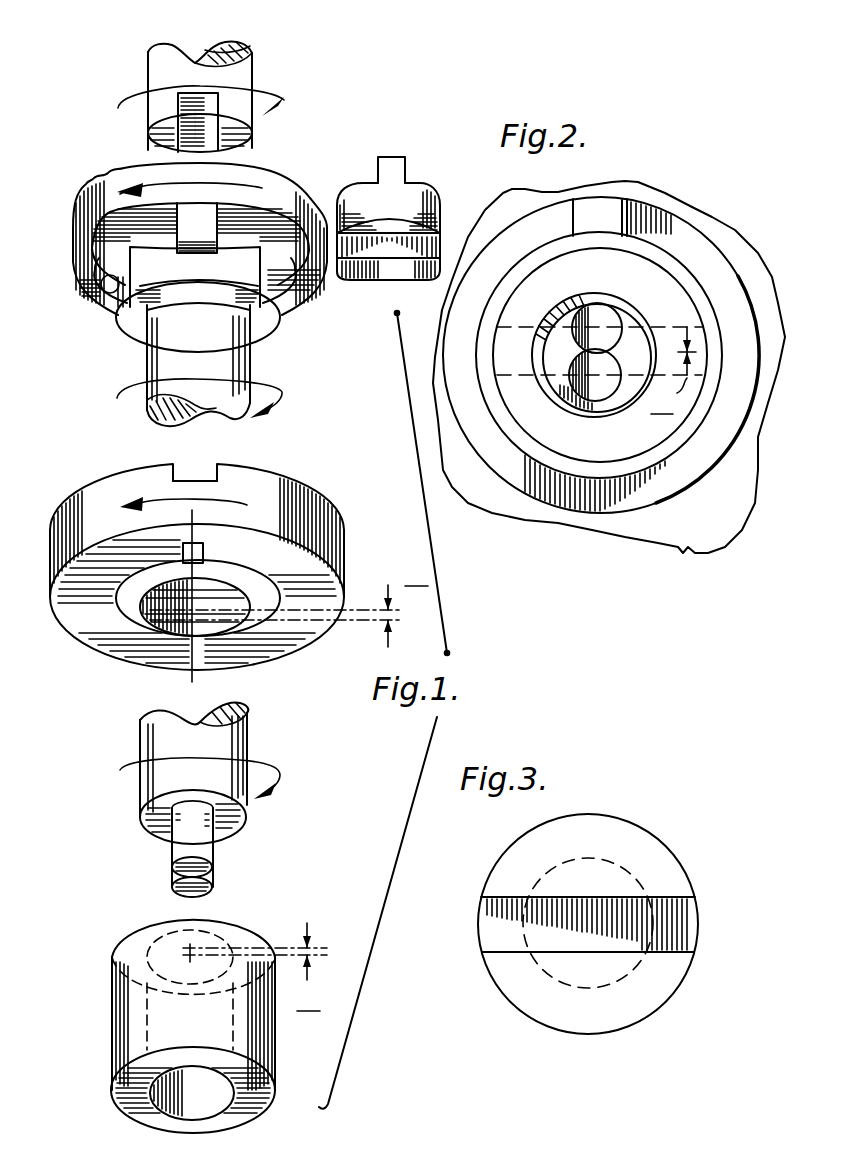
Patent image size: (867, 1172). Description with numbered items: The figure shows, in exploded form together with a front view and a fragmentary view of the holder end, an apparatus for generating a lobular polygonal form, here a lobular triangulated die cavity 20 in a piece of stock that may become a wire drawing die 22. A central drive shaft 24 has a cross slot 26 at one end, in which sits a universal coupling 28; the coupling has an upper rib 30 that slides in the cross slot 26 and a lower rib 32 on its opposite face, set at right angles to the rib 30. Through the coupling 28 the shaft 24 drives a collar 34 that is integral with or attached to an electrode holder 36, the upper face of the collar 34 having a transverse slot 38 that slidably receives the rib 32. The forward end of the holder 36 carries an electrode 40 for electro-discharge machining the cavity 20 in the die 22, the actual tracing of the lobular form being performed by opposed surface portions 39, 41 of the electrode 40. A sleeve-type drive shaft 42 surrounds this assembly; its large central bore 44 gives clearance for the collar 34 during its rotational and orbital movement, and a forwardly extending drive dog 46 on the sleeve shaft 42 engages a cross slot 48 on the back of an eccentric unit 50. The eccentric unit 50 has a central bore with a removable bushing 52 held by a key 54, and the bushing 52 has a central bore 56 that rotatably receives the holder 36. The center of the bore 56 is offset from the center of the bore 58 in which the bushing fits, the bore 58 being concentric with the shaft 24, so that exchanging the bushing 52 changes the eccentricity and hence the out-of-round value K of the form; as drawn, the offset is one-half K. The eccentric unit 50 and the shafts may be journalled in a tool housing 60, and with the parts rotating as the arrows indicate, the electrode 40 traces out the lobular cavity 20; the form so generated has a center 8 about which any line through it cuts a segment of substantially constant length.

In FIG. 1, the center 8 is at (175, 972).
In FIG. 1, the die cavity 20 is at (217, 1097).
In FIG. 2, the die cavity 20 is at (567, 317).
In FIG. 1, the wire drawing die 22 is at (112, 1020).
In FIG. 2, the wire drawing die 22 is at (623, 450).
In FIG. 1, the central drive shaft 24 is at (252, 60).
In FIG. 1, the cross slot 26 is at (205, 150).
In FIG. 1, the universal coupling 28 is at (425, 200).
In FIG. 1, the upper rib 30 is at (392, 167).
In FIG. 1, the lower rib 32 is at (370, 285).
In FIG. 1, the collar 34 is at (270, 333).
In FIG. 3, the collar 34 is at (663, 863).
In FIG. 1, the electrode holder 36 is at (143, 356).
In FIG. 1, the transverse slot 38 is at (105, 290).
In FIG. 3, the transverse slot 38 is at (680, 927).
In FIG. 2, the surface portion 39 is at (608, 303).
In FIG. 1, the electrode 40 is at (213, 860).
In FIG. 2, the electrode 40 is at (607, 322).
In FIG. 2, the surface portion 41 is at (600, 407).
In FIG. 1, the sleeve-type drive shaft 42 is at (87, 192).
In FIG. 2, the sleeve-type drive shaft 42 is at (693, 463).
In FIG. 1, the central bore 44 is at (272, 270).
In FIG. 1, the drive dog 46 is at (175, 248).
In FIG. 2, the drive dog 46 is at (610, 208).
In FIG. 1, the cross slot 48 is at (217, 472).
In FIG. 1, the eccentric unit 50 is at (105, 452).
In FIG. 1, the removable bushing 52 is at (243, 574).
In FIG. 1, the key 54 is at (203, 548).
In FIG. 1, the central bore 56 is at (217, 627).
In FIG. 1, the bore 58 is at (270, 592).
In FIG. 2, the tool housing 60 is at (553, 520).